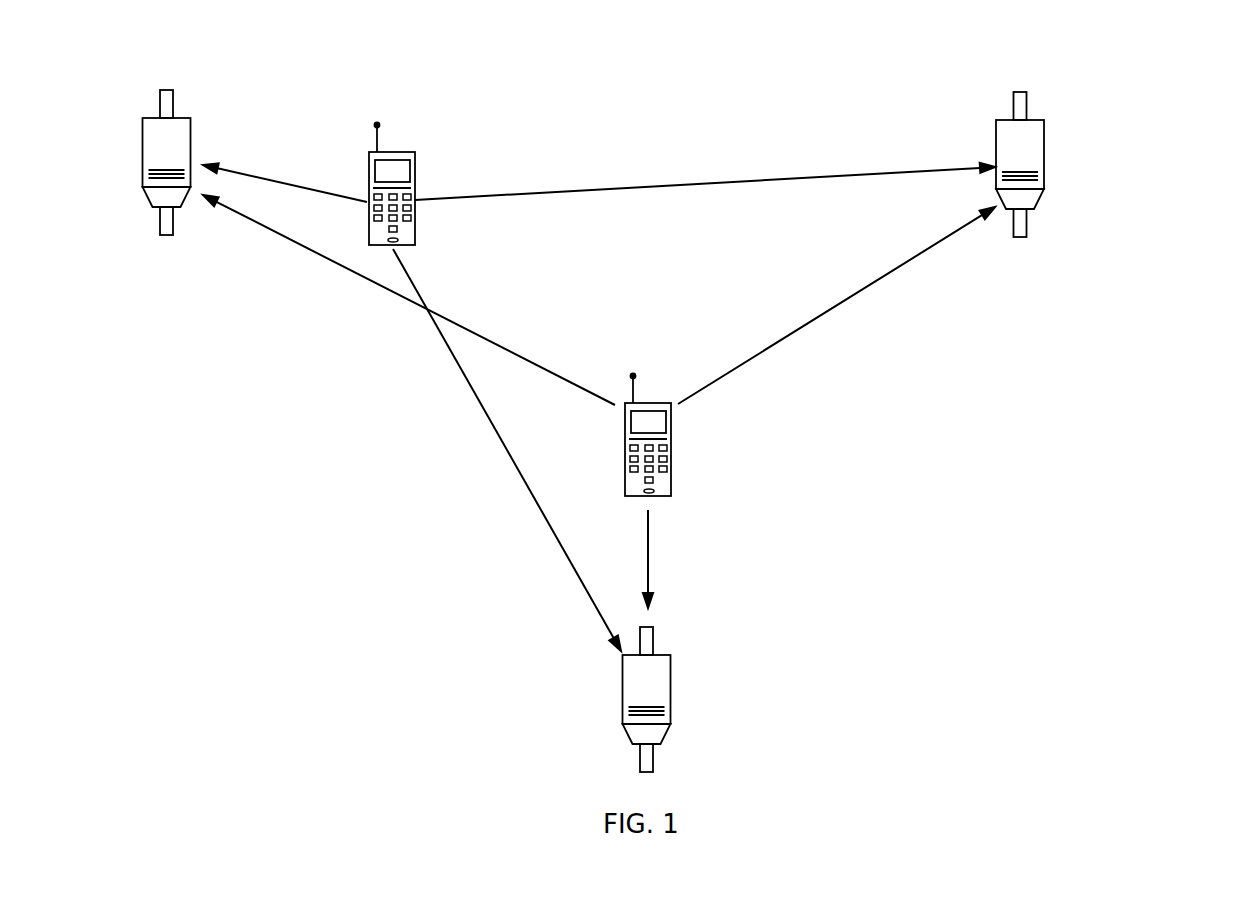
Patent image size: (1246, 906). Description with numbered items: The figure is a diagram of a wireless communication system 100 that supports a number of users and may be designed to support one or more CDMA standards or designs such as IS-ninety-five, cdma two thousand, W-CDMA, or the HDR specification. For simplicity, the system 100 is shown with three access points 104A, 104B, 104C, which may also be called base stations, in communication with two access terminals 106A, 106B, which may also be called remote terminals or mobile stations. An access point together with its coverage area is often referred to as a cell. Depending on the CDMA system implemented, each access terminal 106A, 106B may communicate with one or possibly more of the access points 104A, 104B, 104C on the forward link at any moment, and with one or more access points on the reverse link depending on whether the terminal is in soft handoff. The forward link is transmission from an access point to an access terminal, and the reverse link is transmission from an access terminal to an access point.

The wireless communication system 100 is at (1193, 69).
The access point 104A is at (178, 118).
The access point 104B is at (1033, 122).
The access point 104C is at (660, 657).
The access terminal 106A is at (398, 152).
The access terminal 106B is at (660, 497).